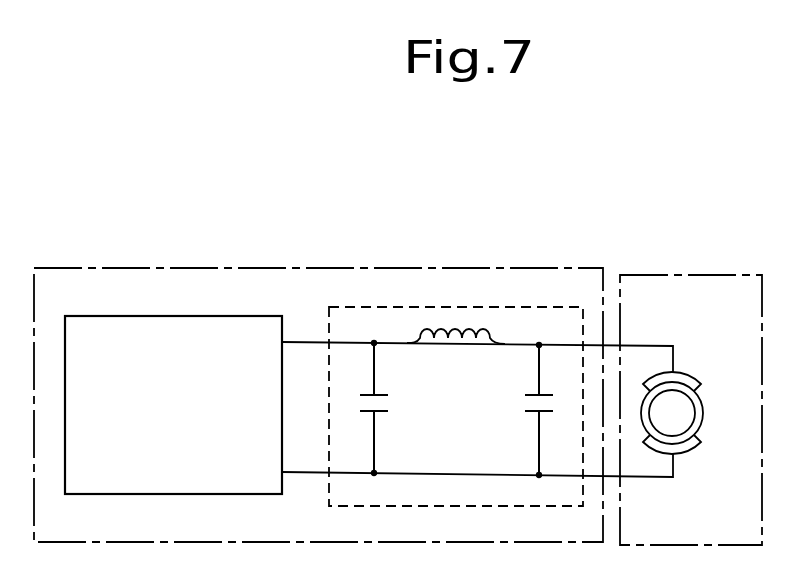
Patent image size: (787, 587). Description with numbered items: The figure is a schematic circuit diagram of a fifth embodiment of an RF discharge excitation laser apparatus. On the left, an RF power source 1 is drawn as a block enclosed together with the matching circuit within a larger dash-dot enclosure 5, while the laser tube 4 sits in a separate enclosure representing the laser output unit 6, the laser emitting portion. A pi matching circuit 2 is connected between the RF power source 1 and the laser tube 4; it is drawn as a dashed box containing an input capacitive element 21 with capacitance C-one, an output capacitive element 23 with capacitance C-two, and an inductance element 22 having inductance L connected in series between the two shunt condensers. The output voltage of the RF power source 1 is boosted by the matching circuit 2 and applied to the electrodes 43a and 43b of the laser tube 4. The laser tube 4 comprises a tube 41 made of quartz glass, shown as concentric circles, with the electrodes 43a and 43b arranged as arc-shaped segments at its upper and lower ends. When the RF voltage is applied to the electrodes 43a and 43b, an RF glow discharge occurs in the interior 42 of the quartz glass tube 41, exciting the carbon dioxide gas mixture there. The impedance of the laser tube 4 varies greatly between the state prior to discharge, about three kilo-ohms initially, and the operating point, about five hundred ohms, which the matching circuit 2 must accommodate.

The RF power source 1 is at (211, 316).
The matching circuit 2 is at (540, 307).
The laser tube 4 is at (686, 370).
The RF power supply section 5 is at (384, 268).
The laser output unit 6 is at (701, 275).
The input capacitive element 21 is at (393, 401).
The inductance element 22 is at (475, 337).
The output capacitive element 23 is at (522, 404).
The tube 41 is at (703, 402).
The interior 42 is at (679, 417).
The electrode 43a is at (690, 380).
The electrode 43b is at (692, 445).